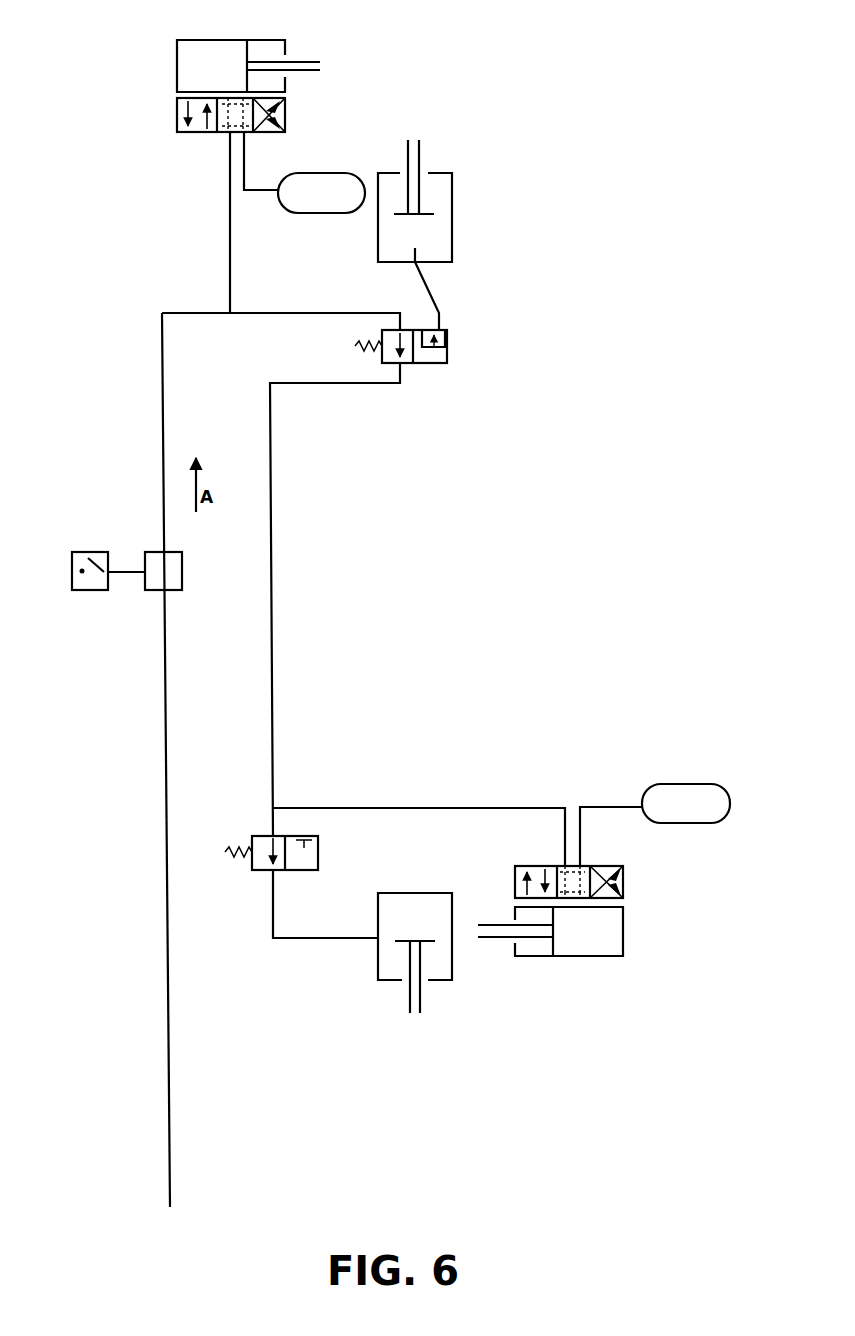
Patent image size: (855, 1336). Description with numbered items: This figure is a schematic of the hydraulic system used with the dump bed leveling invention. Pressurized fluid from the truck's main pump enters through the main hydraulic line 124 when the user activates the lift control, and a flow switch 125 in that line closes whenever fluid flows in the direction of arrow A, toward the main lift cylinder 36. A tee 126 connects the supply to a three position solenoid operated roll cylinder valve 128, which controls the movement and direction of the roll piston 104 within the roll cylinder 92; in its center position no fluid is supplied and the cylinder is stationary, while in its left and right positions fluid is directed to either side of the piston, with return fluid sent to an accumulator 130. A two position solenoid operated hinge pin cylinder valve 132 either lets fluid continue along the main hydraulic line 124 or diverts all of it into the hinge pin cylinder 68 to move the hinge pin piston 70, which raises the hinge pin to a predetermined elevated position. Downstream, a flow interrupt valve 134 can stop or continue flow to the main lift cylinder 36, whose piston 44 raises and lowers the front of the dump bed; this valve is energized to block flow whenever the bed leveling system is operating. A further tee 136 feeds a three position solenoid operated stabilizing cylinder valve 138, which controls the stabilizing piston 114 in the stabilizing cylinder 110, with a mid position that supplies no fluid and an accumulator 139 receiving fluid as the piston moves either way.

The main lift cylinder 36 is at (378, 960).
The piston 44 is at (422, 998).
The hinge pin cylinder 68 is at (452, 237).
The hinge pin piston 70 is at (420, 156).
The roll cylinder 92 is at (177, 62).
The roll piston 104 is at (308, 72).
The stabilizing cylinder 110 is at (597, 956).
The stabilizing piston 114 is at (490, 940).
The main hydraulic line 124 is at (164, 690).
The flow switch 125 is at (83, 552).
The tee 126 is at (228, 312).
The roll cylinder valve 128 is at (177, 117).
The accumulator 130 is at (322, 172).
The hinge pin cylinder valve 132 is at (433, 364).
The flow interrupt valve 134 is at (262, 836).
The tee 136 is at (273, 808).
The stabilizing cylinder valve 138 is at (623, 882).
The accumulator 139 is at (695, 784).